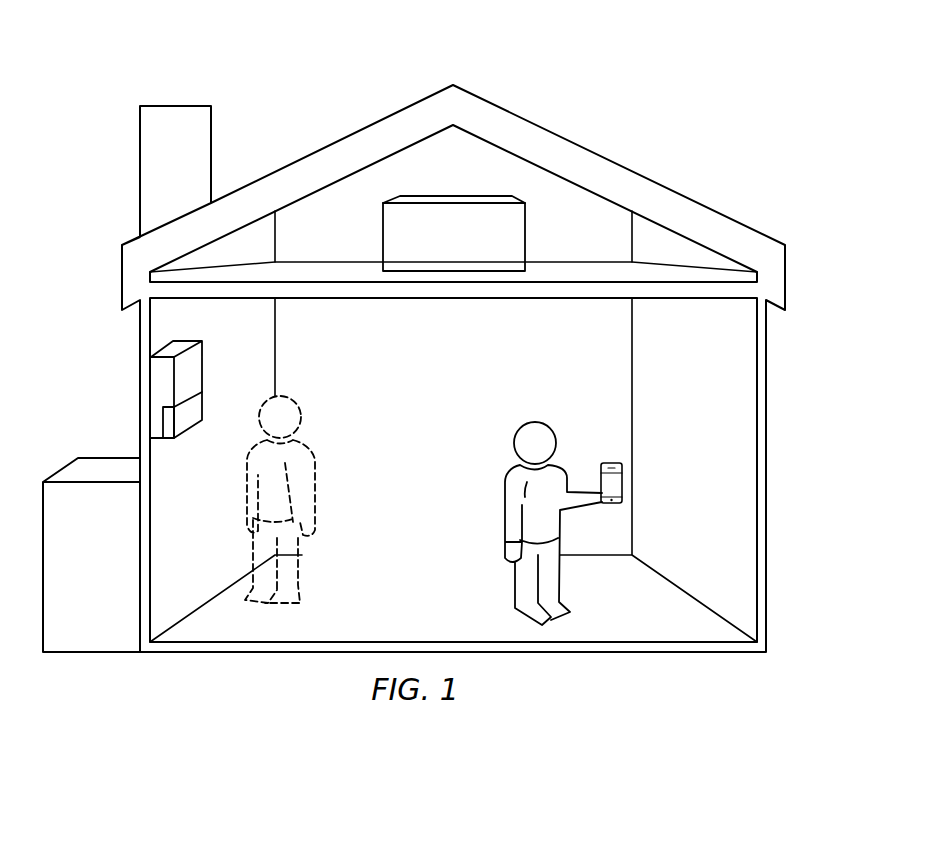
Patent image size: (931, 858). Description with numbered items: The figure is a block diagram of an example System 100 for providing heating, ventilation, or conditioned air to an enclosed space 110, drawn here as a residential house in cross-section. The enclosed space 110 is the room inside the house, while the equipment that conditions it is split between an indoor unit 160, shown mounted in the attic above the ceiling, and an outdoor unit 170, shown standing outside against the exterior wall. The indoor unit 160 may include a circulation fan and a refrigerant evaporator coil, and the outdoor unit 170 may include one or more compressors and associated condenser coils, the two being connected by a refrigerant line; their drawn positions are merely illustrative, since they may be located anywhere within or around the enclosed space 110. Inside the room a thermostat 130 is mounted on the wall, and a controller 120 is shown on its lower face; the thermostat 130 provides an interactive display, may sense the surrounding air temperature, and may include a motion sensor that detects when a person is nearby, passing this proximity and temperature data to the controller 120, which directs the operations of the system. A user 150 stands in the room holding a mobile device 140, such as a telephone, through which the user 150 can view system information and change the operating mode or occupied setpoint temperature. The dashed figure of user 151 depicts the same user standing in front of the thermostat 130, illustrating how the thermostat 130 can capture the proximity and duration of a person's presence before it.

The System 100 is at (652, 113).
The enclosed space 110 is at (453, 470).
The controller 120 is at (178, 422).
The thermostat 130 is at (194, 357).
The mobile device 140 is at (623, 482).
The user 150 is at (548, 421).
The user 151 is at (298, 410).
The indoor unit 160 is at (454, 233).
The outdoor unit 170 is at (91, 555).